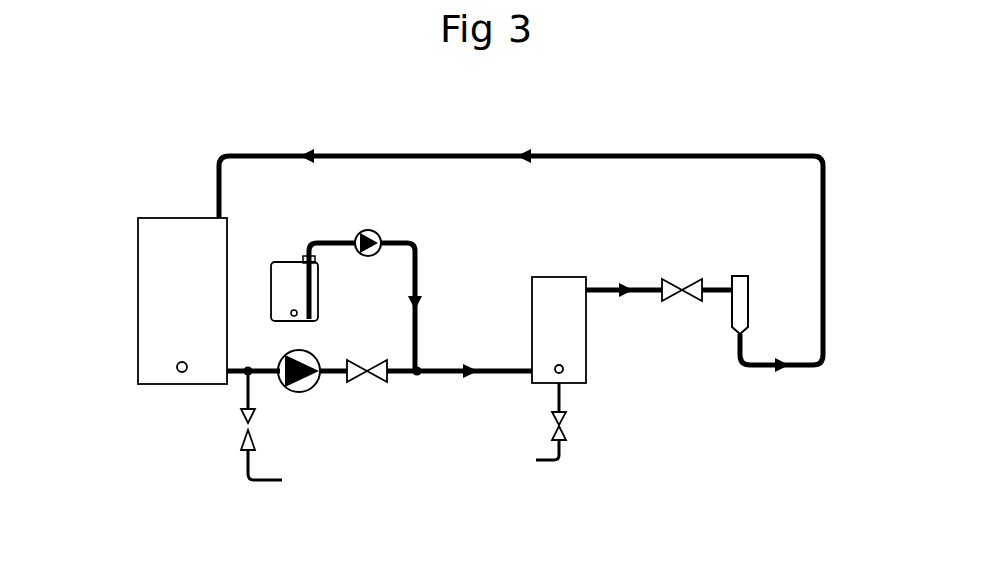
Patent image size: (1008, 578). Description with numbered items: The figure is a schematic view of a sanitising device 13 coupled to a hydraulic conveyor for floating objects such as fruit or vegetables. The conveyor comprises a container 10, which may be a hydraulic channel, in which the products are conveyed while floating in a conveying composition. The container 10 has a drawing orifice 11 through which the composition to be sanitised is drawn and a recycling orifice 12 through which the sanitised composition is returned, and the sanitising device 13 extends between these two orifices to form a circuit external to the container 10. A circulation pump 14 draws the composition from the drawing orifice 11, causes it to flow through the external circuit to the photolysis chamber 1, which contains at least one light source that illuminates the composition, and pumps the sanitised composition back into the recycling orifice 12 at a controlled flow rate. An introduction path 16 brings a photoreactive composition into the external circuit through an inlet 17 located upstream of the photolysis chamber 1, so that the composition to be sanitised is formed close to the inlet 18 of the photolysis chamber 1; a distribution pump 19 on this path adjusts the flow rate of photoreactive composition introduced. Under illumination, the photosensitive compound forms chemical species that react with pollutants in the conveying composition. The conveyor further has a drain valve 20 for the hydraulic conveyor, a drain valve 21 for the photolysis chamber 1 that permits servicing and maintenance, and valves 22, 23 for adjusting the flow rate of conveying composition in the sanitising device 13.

The photolysis chamber 1 is at (557, 292).
The container 10 is at (155, 362).
The drawing orifice 11 is at (227, 385).
The recycling orifice 12 is at (219, 218).
The sanitising device 13 is at (830, 488).
The circulation pump 14 is at (285, 352).
The introduction path 16 is at (417, 243).
The inlet for photoreactive composition 17 is at (420, 368).
The inlet for composition 18 is at (530, 372).
The distribution pump 19 is at (375, 228).
The drain valve of the hydraulic conveyor 20 is at (250, 430).
The drain valve of the plurality of photolysis chambers 21 is at (566, 425).
The flow rate adjusting valve 22 is at (367, 371).
The flow rate adjusting valve 23 is at (690, 282).